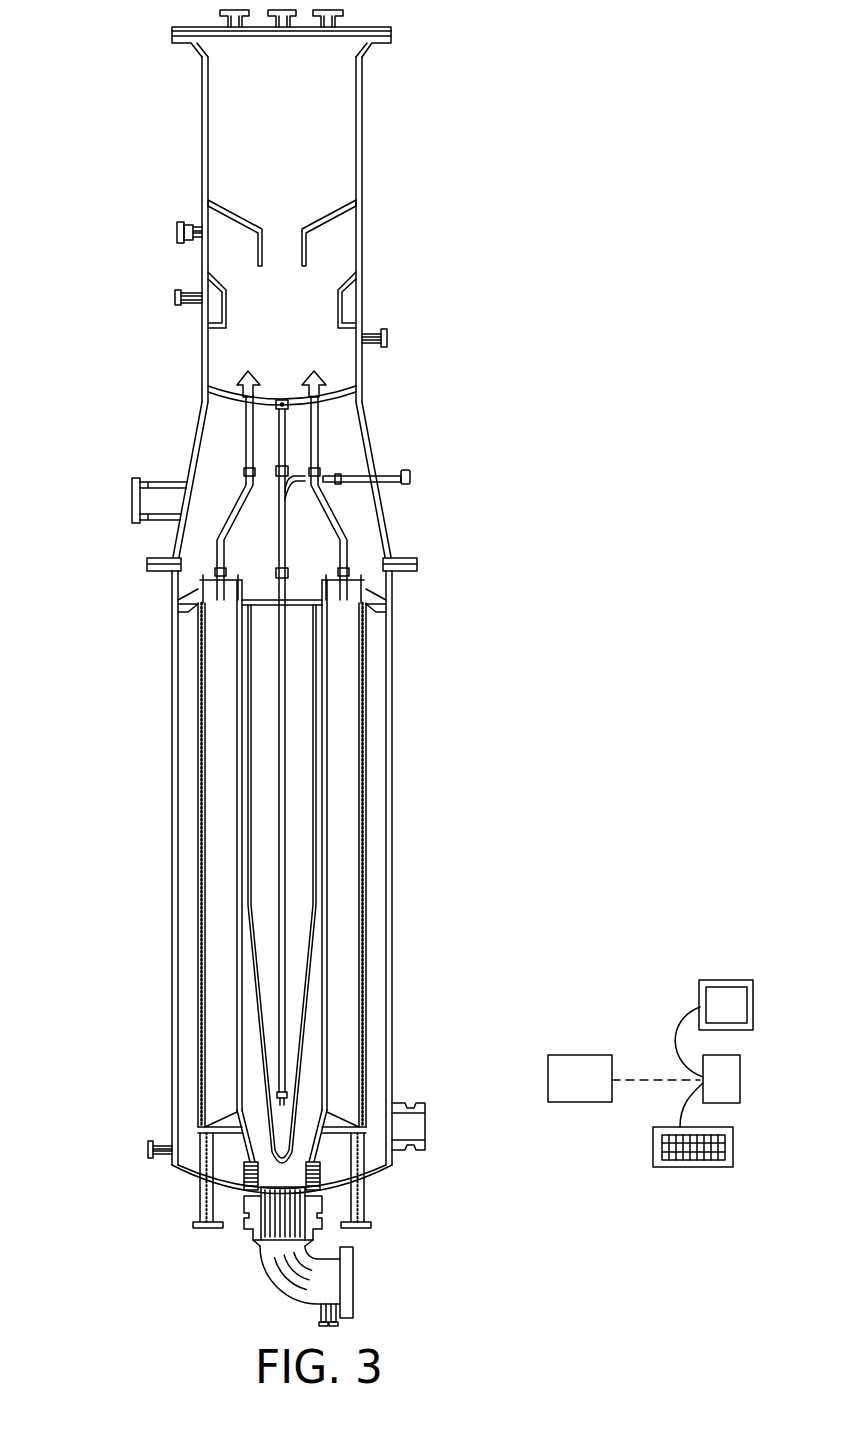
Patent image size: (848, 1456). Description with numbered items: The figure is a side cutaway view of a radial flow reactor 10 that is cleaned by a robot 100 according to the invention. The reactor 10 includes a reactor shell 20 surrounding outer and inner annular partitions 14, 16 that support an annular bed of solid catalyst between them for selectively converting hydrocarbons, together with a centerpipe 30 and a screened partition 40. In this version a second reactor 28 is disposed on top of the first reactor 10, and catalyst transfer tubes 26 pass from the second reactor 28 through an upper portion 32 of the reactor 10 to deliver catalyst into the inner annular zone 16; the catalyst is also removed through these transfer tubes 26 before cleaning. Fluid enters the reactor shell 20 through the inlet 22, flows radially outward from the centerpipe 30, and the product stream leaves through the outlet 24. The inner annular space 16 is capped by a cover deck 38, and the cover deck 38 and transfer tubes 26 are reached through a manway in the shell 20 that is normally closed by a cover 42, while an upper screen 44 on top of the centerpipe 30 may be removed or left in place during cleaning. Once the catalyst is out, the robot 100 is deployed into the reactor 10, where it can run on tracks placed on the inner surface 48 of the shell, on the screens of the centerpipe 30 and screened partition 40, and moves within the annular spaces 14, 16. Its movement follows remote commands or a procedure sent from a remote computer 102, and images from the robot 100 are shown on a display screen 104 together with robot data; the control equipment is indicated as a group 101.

The radial flow reactor 10 is at (620, 466).
The outer annular partition 14 is at (375, 903).
The inner annular space 16 is at (348, 965).
The reactor shell 20 is at (392, 745).
The inlet 22 is at (340, 1285).
The outlet 24 is at (420, 1128).
The catalyst transfer tubes 26 is at (248, 430).
The second reactor 28 is at (362, 148).
The centerpipe 30 is at (323, 682).
The upper portion 32 is at (502, 372).
The cover deck 38 is at (208, 572).
The screened partition 40 is at (160, 498).
The cover 42 is at (132, 505).
The upper screen 44 is at (272, 602).
The inner surface 48 is at (178, 907).
The robot 100 is at (580, 1055).
The computer system 101 is at (640, 1123).
The remote computer 102 is at (670, 1044).
The display screen 104 is at (727, 980).